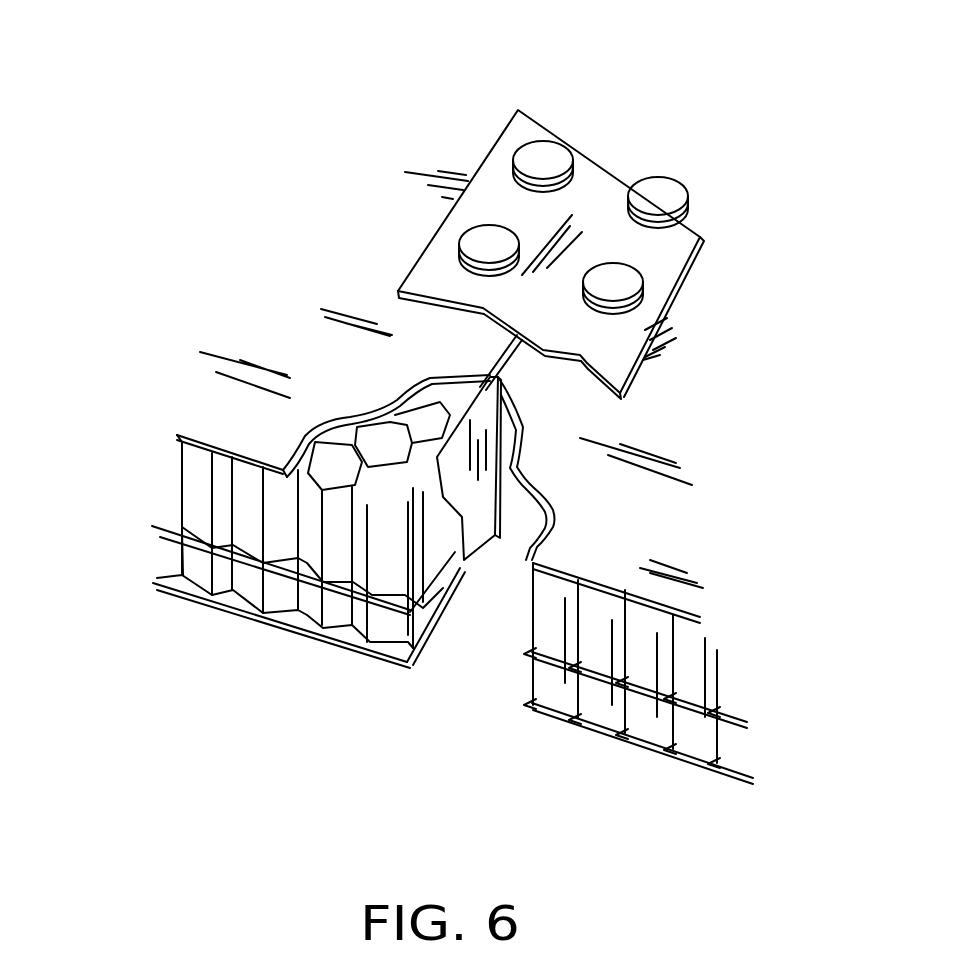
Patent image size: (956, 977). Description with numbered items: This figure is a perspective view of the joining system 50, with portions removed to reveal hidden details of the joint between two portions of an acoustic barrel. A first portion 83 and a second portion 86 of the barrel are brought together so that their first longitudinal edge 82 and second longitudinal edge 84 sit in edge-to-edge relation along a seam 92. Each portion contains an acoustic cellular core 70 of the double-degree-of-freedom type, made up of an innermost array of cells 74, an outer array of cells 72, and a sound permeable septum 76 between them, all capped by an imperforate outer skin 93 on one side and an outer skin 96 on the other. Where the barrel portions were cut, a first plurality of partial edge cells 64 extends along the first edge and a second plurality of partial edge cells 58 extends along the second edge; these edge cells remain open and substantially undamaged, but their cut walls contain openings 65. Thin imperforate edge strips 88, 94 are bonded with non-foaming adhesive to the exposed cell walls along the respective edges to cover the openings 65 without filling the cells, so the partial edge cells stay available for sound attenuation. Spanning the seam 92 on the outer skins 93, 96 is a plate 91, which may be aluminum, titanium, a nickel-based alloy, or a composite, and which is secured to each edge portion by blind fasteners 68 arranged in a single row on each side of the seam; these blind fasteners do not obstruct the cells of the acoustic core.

The joining system 50 is at (332, 123).
The second plurality of partial edge cells 58 is at (503, 443).
The first plurality of partial edge cells 64 is at (450, 395).
The openings 65 is at (432, 597).
The blind fasteners 68 is at (658, 198).
The acoustic cellular core 70 is at (687, 682).
The outer array of cells 72 is at (195, 488).
The innermost array of cells 74 is at (193, 558).
The sound permeable septum 76 is at (180, 530).
The first longitudinal edge 82 is at (348, 662).
The first portion of acoustic barrel 83 is at (230, 610).
The second longitudinal edge 84 is at (558, 732).
The second portion of acoustic barrel 86 is at (688, 755).
The edge strip 88 is at (467, 550).
The plate 91 is at (683, 273).
The seam 92 is at (495, 348).
The imperforate outer skin 93 is at (257, 327).
The edge strip 94 is at (500, 425).
The outer skin 96 is at (640, 545).